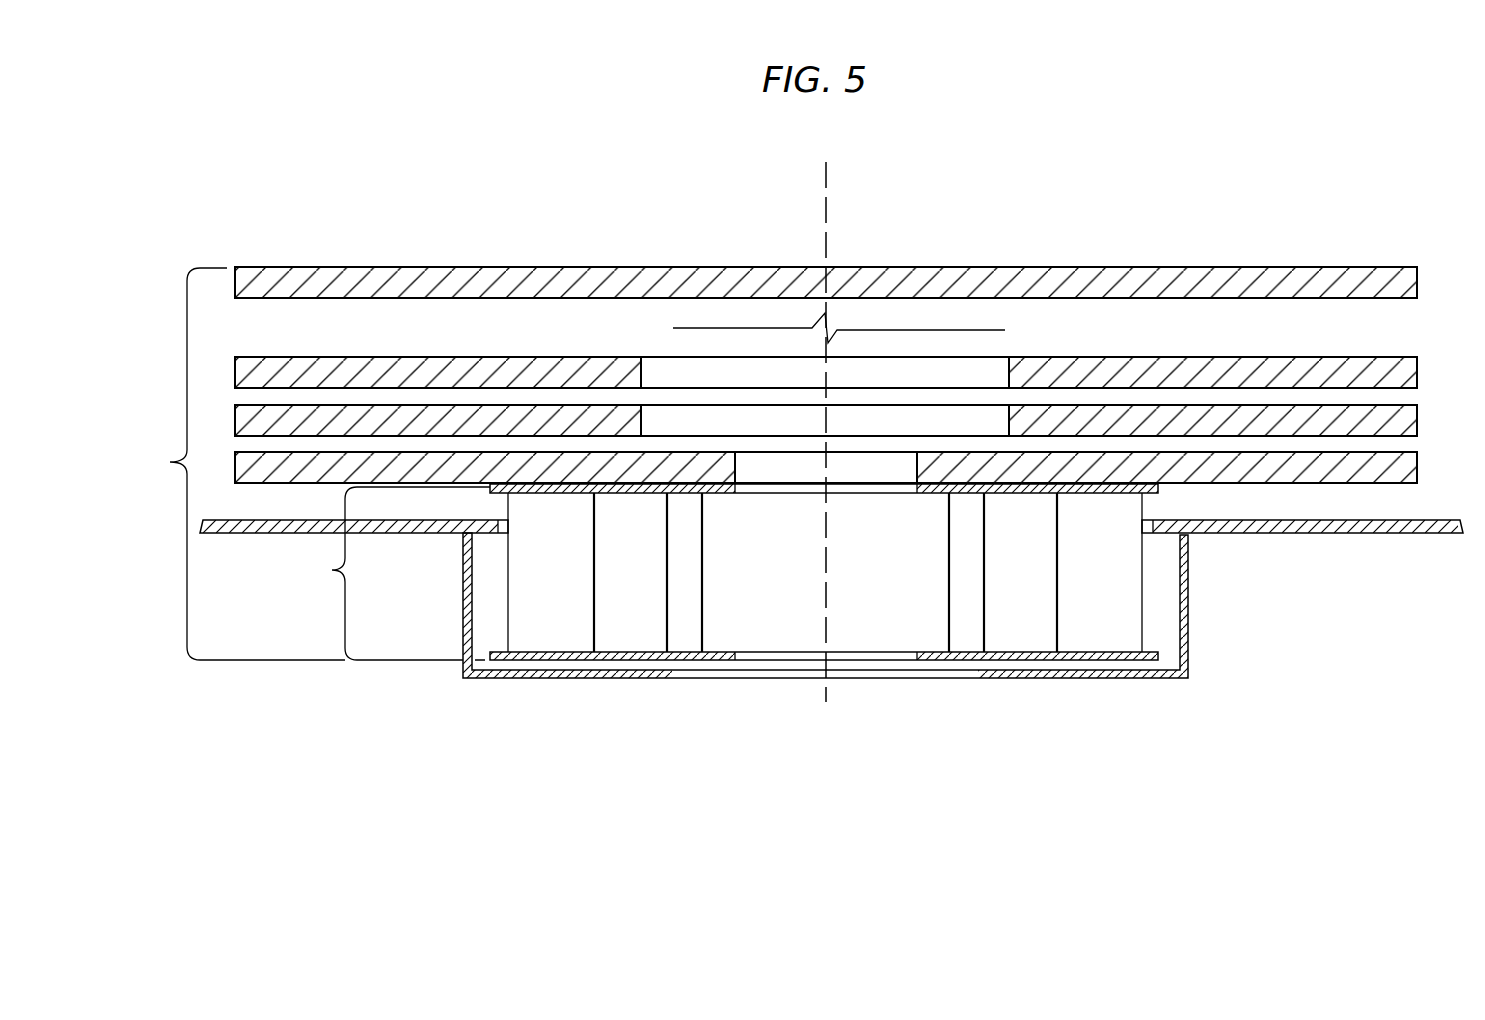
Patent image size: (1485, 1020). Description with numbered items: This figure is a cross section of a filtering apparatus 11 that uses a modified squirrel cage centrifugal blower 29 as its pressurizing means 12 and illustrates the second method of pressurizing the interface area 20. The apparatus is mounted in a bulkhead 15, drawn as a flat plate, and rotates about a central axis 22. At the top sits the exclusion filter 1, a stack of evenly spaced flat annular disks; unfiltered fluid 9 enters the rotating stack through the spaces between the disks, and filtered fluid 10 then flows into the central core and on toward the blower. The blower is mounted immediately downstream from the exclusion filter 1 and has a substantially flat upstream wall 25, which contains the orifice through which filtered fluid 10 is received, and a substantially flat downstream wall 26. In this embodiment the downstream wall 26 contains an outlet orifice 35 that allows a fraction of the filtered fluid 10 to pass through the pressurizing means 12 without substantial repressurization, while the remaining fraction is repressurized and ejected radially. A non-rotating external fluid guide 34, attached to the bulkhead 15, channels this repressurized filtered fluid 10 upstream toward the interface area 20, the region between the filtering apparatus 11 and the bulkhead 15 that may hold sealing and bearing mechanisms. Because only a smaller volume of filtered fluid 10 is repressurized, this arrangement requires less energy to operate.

The exclusion filter 1 is at (1421, 268).
The unfiltered fluid 9 is at (1380, 330).
The filtered fluid 10 is at (1098, 506).
The filtering apparatus 11 is at (245, 464).
The pressurizing means 12 is at (381, 573).
The squirrel cage centrifugal blower 29 is at (381, 573).
The bulkhead 15 is at (1297, 532).
The interface area 20 is at (403, 502).
The central axis 22 is at (827, 178).
The upstream wall 25 is at (552, 497).
The downstream wall 26 is at (553, 650).
The external fluid guide 34 is at (1145, 680).
The outlet orifice 35 is at (733, 683).